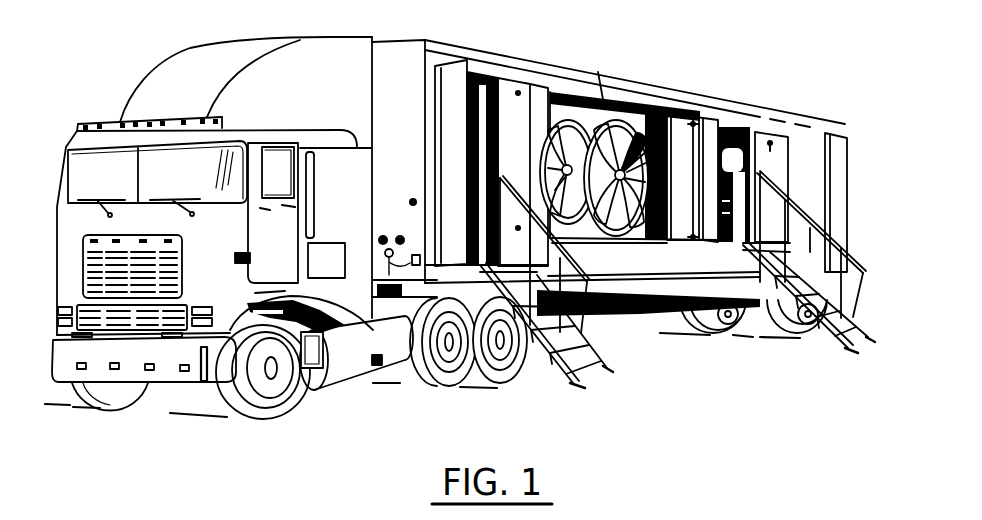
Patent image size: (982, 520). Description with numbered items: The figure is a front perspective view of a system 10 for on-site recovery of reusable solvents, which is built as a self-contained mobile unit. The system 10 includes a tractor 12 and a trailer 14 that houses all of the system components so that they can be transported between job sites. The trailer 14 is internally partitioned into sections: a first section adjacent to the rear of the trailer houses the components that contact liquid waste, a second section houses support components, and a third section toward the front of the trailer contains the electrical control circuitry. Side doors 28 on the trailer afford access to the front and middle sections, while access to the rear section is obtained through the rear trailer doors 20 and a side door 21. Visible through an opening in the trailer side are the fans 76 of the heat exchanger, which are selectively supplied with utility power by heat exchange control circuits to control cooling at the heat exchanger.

The system 10 is at (464, 216).
The tractor 12 is at (72, 128).
The trailer 14 is at (735, 107).
The rear trailer doors 20 is at (843, 135).
The side door 21 is at (767, 133).
The side doors 28 is at (452, 76).
The fans 76 is at (576, 97).